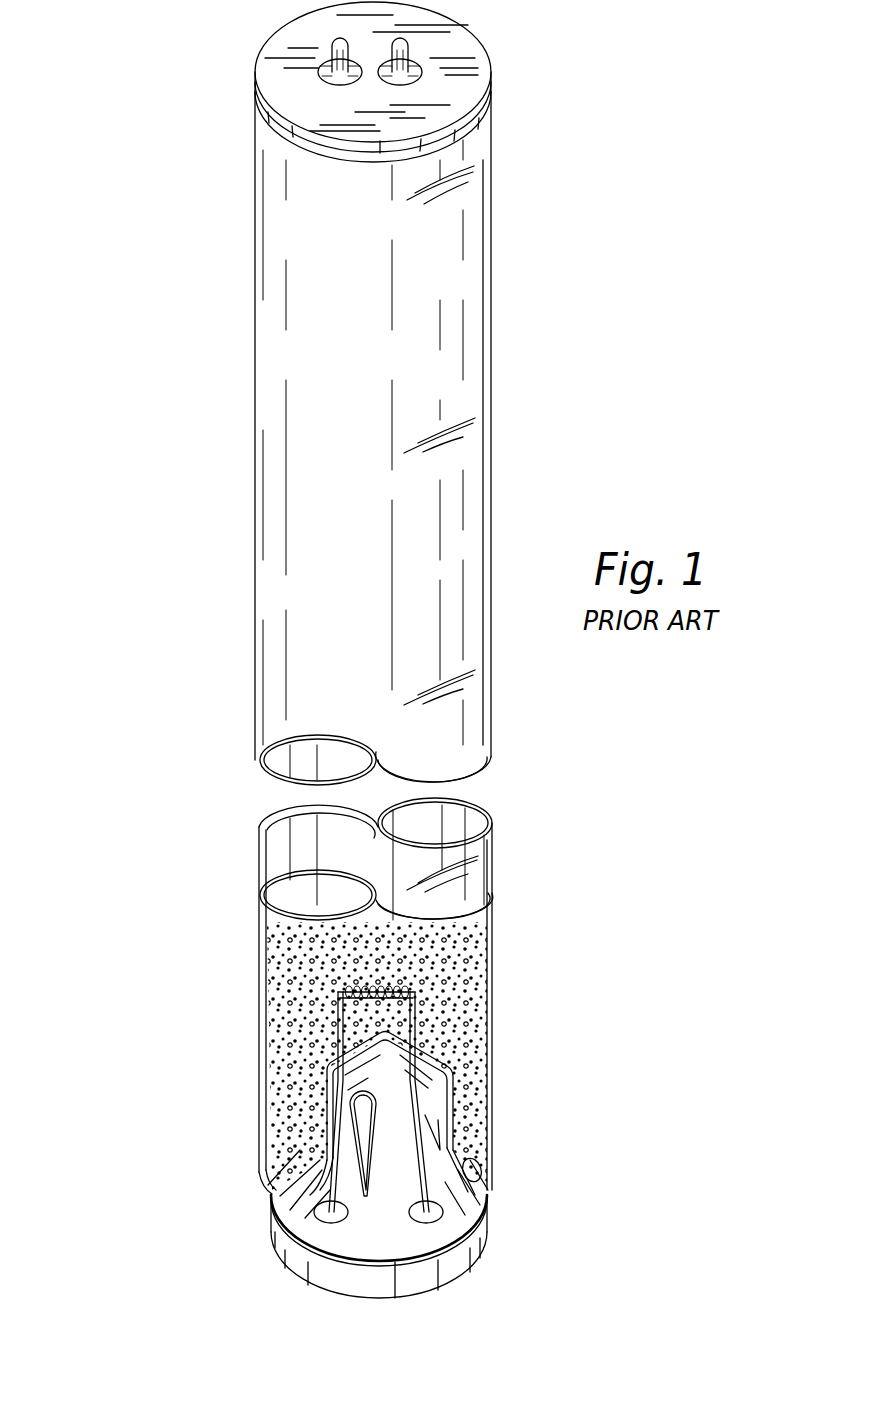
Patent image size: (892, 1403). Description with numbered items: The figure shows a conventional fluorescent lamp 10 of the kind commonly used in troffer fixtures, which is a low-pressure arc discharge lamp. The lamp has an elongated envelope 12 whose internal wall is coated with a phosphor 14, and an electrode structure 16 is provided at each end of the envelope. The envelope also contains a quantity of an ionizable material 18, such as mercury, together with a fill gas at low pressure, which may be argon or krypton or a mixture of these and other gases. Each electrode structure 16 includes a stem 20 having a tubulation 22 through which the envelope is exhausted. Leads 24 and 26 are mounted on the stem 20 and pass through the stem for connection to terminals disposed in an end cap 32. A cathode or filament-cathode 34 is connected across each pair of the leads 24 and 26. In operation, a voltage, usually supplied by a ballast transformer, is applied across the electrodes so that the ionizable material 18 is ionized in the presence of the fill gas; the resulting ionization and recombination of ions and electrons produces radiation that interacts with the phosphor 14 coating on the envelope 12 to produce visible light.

The fluorescent lamp 10 is at (136, 324).
The elongated envelope 12 is at (492, 370).
The phosphor 14 is at (478, 827).
The electrode structure 16 is at (312, 991).
The ionizable material 18 is at (478, 986).
The stem 20 is at (455, 1127).
The tubulation 22 is at (350, 1185).
The lead 24 is at (337, 1030).
The lead 26 is at (418, 1030).
The end cap 32 is at (492, 1211).
The filament-cathode 34 is at (356, 988).